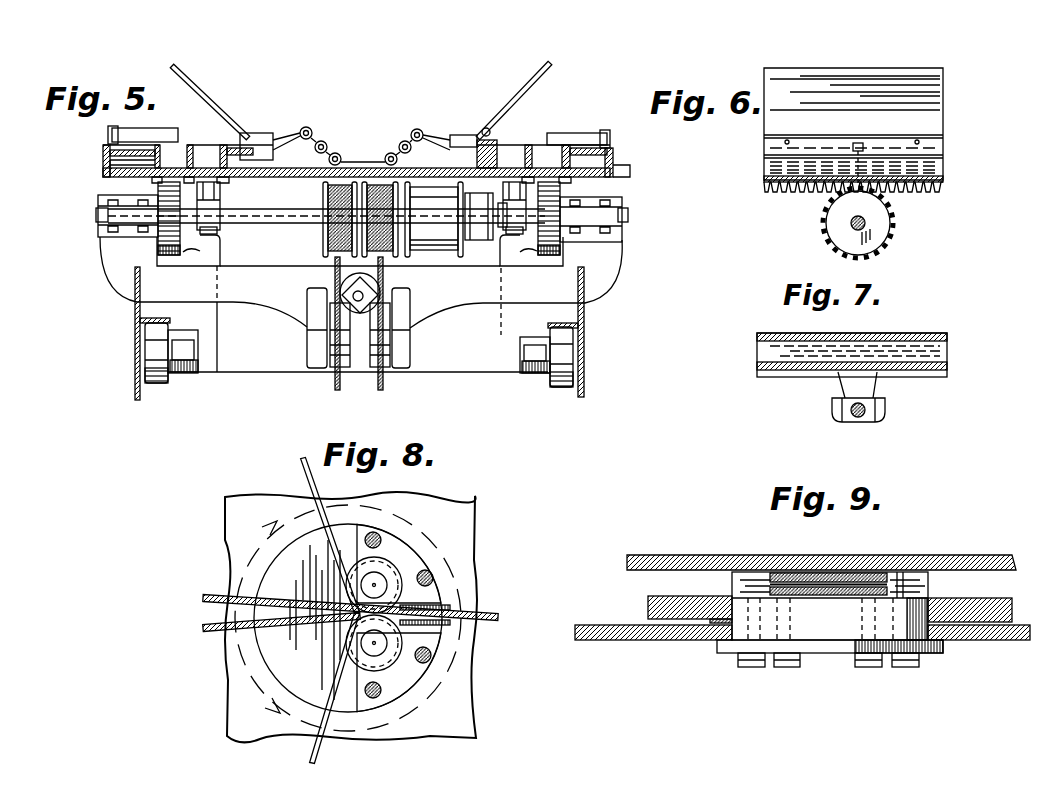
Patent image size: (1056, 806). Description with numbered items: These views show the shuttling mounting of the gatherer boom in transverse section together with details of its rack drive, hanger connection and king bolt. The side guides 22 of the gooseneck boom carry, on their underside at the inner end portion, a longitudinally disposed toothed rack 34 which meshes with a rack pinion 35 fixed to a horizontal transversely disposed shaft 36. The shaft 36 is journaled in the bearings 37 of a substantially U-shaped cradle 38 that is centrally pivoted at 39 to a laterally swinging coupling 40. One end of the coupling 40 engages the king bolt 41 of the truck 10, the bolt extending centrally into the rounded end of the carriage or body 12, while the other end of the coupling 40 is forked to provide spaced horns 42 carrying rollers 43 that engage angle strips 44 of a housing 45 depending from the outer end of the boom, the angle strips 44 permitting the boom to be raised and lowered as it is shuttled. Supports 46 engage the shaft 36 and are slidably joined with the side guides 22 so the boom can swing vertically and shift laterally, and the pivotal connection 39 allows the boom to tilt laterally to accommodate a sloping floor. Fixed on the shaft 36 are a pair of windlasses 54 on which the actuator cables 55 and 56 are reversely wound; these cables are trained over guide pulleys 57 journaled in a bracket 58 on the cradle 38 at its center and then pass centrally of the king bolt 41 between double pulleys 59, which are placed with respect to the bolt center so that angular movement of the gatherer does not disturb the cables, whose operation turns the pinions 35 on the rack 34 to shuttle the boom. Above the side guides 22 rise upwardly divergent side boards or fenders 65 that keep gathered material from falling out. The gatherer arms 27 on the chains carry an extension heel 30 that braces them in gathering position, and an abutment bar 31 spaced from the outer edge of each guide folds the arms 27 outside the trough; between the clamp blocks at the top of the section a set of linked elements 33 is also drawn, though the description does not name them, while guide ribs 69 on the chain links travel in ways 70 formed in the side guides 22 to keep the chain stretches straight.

In FIG. 8, the wheeled truck 10 is at (407, 723).
In FIG. 9, the wheeled truck 10 is at (620, 638).
In FIG. 9, the carriage or body 12 is at (980, 555).
In FIG. 5, the side guide 22 is at (197, 145).
In FIG. 6, the side guide 22 is at (764, 163).
In FIG. 7, the side guide 22 is at (905, 340).
In FIG. 5, the gatherer arm 27 is at (110, 143).
In FIG. 5, the extension heel 30 is at (145, 135).
In FIG. 5, the abutment bar 31 is at (618, 165).
In FIG. 5, the link 33 is at (405, 147).
In FIG. 5, the toothed rack 34 is at (540, 160).
In FIG. 6, the toothed rack 34 is at (768, 188).
In FIG. 5, the rack pinion 35 is at (158, 247).
In FIG. 6, the rack pinion 35 is at (900, 228).
In FIG. 5, the horizontal shaft 36 is at (272, 223).
In FIG. 6, the horizontal shaft 36 is at (850, 225).
In FIG. 7, the horizontal shaft 36 is at (858, 418).
In FIG. 5, the bearing 37 is at (102, 232).
In FIG. 5, the cradle 38 is at (448, 315).
In FIG. 5, the pivotal connection 39 is at (330, 283).
In FIG. 5, the coupling 40 is at (252, 373).
In FIG. 9, the coupling 40 is at (655, 600).
In FIG. 8, the king bolt 41 is at (280, 652).
In FIG. 9, the king bolt 41 is at (836, 653).
In FIG. 5, the horn 42 is at (178, 373).
In FIG. 5, the roller 43 is at (157, 383).
In FIG. 5, the angle strip 44 is at (163, 318).
In FIG. 5, the housing 45 is at (135, 340).
In FIG. 5, the support 46 is at (207, 195).
In FIG. 7, the support 46 is at (867, 388).
In FIG. 5, the windlass 54 is at (330, 270).
In FIG. 5, the actuator cable 55 is at (337, 373).
In FIG. 8, the actuator cable 55 is at (203, 597).
In FIG. 9, the actuator cable 55 is at (830, 580).
In FIG. 5, the actuator cable 56 is at (390, 373).
In FIG. 8, the actuator cable 56 is at (203, 630).
In FIG. 9, the actuator cable 56 is at (830, 606).
In FIG. 5, the guide pulley 57 is at (327, 375).
In FIG. 5, the bracket 58 is at (410, 355).
In FIG. 8, the double pulley 59 is at (393, 573).
In FIG. 9, the double pulley 59 is at (796, 575).
In FIG. 5, the side board or fender 65 is at (527, 83).
In FIG. 6, the side board or fender 65 is at (925, 95).
In FIG. 5, the guide rib 69 is at (573, 143).
In FIG. 5, the way 70 is at (150, 178).